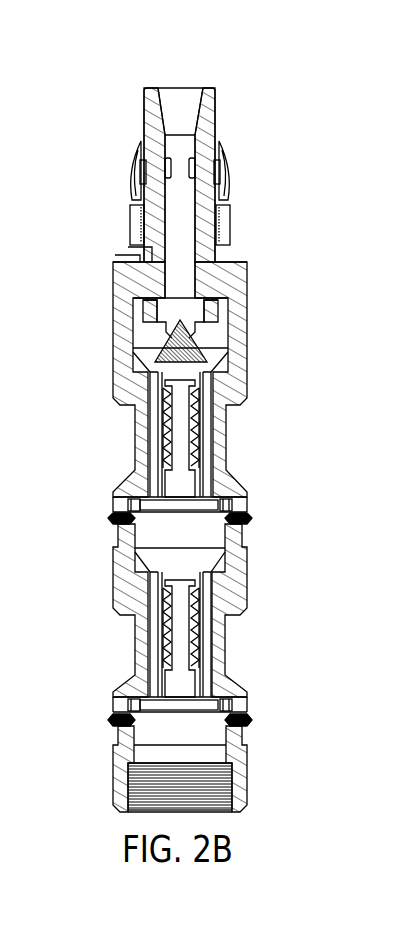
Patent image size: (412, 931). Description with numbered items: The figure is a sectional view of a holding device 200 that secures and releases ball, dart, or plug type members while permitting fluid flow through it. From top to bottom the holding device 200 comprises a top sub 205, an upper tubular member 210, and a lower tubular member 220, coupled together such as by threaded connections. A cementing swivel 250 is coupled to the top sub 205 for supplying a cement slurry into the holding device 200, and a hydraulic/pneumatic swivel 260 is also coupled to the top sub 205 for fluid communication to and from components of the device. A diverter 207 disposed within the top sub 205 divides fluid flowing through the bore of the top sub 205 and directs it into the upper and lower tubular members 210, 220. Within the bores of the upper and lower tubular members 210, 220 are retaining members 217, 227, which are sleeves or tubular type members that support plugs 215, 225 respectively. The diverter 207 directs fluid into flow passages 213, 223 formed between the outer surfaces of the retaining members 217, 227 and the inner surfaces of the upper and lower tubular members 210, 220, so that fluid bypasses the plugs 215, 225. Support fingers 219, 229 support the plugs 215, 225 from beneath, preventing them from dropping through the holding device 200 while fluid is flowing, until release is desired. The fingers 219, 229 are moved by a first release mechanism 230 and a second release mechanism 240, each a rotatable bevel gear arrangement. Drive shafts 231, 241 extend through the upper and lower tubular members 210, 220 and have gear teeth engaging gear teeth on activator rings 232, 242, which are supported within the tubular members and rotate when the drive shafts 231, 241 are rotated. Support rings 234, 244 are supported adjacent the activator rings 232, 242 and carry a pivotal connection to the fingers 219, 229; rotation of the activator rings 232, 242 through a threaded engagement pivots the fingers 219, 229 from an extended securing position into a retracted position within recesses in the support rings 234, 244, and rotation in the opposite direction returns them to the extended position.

The holding device 200 is at (258, 114).
The top sub 205 is at (247, 272).
The diverter 207 is at (186, 342).
The upper tubular member 210 is at (226, 438).
The flow passage 213 is at (228, 383).
The plug 215 is at (170, 413).
The retaining member 217 is at (150, 455).
The support fingers 219 is at (150, 510).
The lower tubular member 220 is at (226, 630).
The flow passage 223 is at (232, 570).
The plug 225 is at (160, 596).
The retaining member 227 is at (152, 650).
The support fingers 229 is at (172, 708).
The first release mechanism 230 is at (280, 520).
The drive shaft 231 is at (108, 518).
The activator ring 232 is at (243, 499).
The support ring 234 is at (183, 507).
The second release mechanism 240 is at (278, 710).
The drive shaft 241 is at (108, 720).
The activator ring 242 is at (232, 707).
The support ring 244 is at (222, 742).
The cementing swivel 250 is at (228, 164).
The hydraulic/pneumatic swivel 260 is at (229, 230).